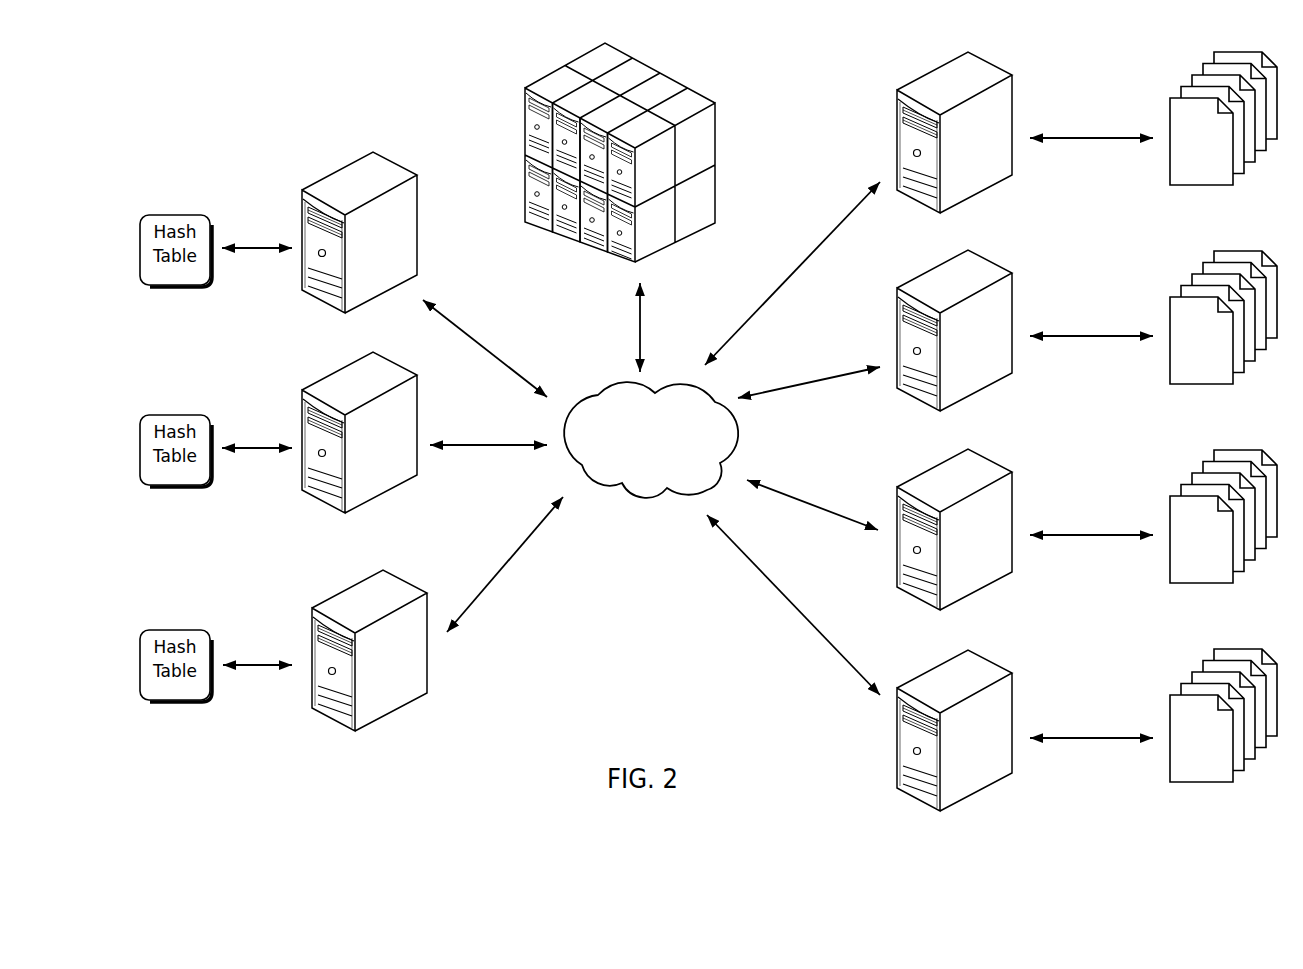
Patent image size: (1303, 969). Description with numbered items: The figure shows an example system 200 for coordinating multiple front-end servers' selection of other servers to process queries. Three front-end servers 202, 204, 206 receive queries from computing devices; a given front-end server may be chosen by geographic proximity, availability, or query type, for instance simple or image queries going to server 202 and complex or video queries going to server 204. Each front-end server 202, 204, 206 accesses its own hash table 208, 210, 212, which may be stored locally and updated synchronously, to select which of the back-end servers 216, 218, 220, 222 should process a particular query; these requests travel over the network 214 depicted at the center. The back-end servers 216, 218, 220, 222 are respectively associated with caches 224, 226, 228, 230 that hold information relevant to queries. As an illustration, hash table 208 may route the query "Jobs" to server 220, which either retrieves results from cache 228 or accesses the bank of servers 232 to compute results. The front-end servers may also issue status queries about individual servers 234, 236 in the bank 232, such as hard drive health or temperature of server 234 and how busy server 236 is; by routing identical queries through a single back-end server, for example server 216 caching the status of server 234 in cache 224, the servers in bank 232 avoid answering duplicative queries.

The system 200 is at (258, 90).
The front-end server 202 is at (308, 184).
The front-end server 204 is at (310, 385).
The front-end server 206 is at (322, 603).
The hash table 208 is at (167, 286).
The hash table 210 is at (167, 486).
The hash table 212 is at (167, 701).
The network 214 is at (601, 395).
The back-end server 216 is at (911, 83).
The back-end server 218 is at (912, 280).
The back-end server 220 is at (912, 479).
The back-end server 222 is at (912, 680).
The cache 224 is at (1160, 196).
The cache 226 is at (1160, 395).
The cache 228 is at (1160, 595).
The cache 230 is at (1168, 805).
The bank of servers 232 is at (505, 76).
The server 234 is at (650, 66).
The server 236 is at (705, 92).